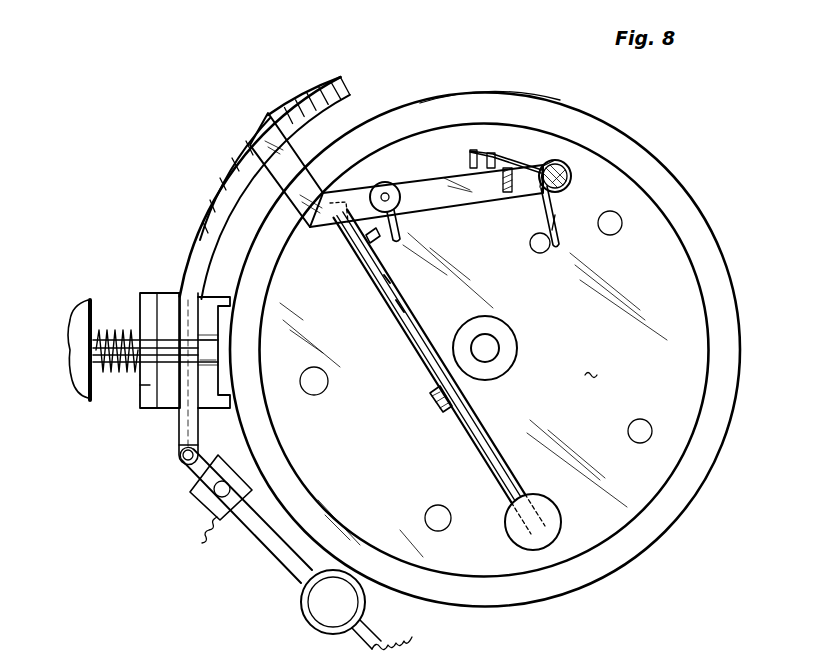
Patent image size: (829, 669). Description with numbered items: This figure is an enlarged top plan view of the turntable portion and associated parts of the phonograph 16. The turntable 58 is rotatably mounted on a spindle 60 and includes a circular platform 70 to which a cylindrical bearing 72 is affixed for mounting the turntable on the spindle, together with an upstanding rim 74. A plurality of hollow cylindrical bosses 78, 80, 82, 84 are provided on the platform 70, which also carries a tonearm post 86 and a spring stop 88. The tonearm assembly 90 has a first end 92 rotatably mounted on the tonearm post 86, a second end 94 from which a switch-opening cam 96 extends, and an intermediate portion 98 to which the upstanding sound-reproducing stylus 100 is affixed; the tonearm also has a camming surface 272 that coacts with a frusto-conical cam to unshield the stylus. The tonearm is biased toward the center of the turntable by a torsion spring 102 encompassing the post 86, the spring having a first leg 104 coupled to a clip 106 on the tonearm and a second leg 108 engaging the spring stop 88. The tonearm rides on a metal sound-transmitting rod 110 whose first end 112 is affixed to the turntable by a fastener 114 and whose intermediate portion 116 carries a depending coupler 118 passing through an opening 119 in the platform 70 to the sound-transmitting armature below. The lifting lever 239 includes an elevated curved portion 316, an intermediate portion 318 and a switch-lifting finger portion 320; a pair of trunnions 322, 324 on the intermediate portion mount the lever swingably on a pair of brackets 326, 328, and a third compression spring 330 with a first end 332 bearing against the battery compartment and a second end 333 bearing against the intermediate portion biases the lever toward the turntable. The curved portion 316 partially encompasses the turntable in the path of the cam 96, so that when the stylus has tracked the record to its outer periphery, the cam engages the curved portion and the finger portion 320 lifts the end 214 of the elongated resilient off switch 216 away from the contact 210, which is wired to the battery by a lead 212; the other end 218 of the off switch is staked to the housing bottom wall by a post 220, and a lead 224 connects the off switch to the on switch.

The phonograph 16 is at (745, 325).
The turntable 58 is at (480, 88).
The spindle 60 is at (490, 346).
The circular platform 70 is at (595, 361).
The cylindrical bearing 72 is at (518, 354).
The upstanding rim 74 is at (687, 223).
The hollow cylindrical boss 78 is at (320, 388).
The hollow cylindrical boss 80 is at (610, 226).
The hollow cylindrical boss 82 is at (640, 431).
The hollow cylindrical boss 84 is at (446, 506).
The tonearm post 86 is at (572, 180).
The spring stop 88 is at (546, 257).
The tonearm assembly 90 is at (446, 210).
The first end 92 is at (523, 165).
The second end 94 is at (318, 230).
The switch-opening cam 96 is at (290, 137).
The intermediate portion 98 is at (451, 183).
The stylus 100 is at (385, 182).
The torsion spring 102 is at (570, 168).
The first leg 104 is at (474, 148).
The clip 106 is at (493, 153).
The second leg 108 is at (555, 227).
The sound-transmitting rod 110 is at (478, 440).
The first end 112 is at (517, 477).
The fastener 114 is at (550, 501).
The intermediate portion 116 is at (415, 326).
The coupler 118 is at (425, 402).
The opening 119 is at (392, 318).
The contact 210 is at (205, 491).
The lead 212 is at (208, 535).
The end 214 is at (182, 472).
The off switch 216 is at (270, 550).
The end 218 is at (318, 627).
The post 220 is at (322, 603).
The lead 224 is at (418, 646).
The lifting lever 239 is at (207, 213).
The camming surface 272 is at (363, 237).
The curved portion 316 is at (238, 178).
The intermediate portion 318 is at (180, 382).
The switch-lifting finger portion 320 is at (192, 445).
The trunnion 322 is at (125, 335).
The trunnion 324 is at (280, 335).
The bracket 326 is at (167, 293).
The bracket 328 is at (375, 290).
The third compression spring 330 is at (100, 385).
The first end 332 is at (98, 330).
The second end 333 is at (138, 388).